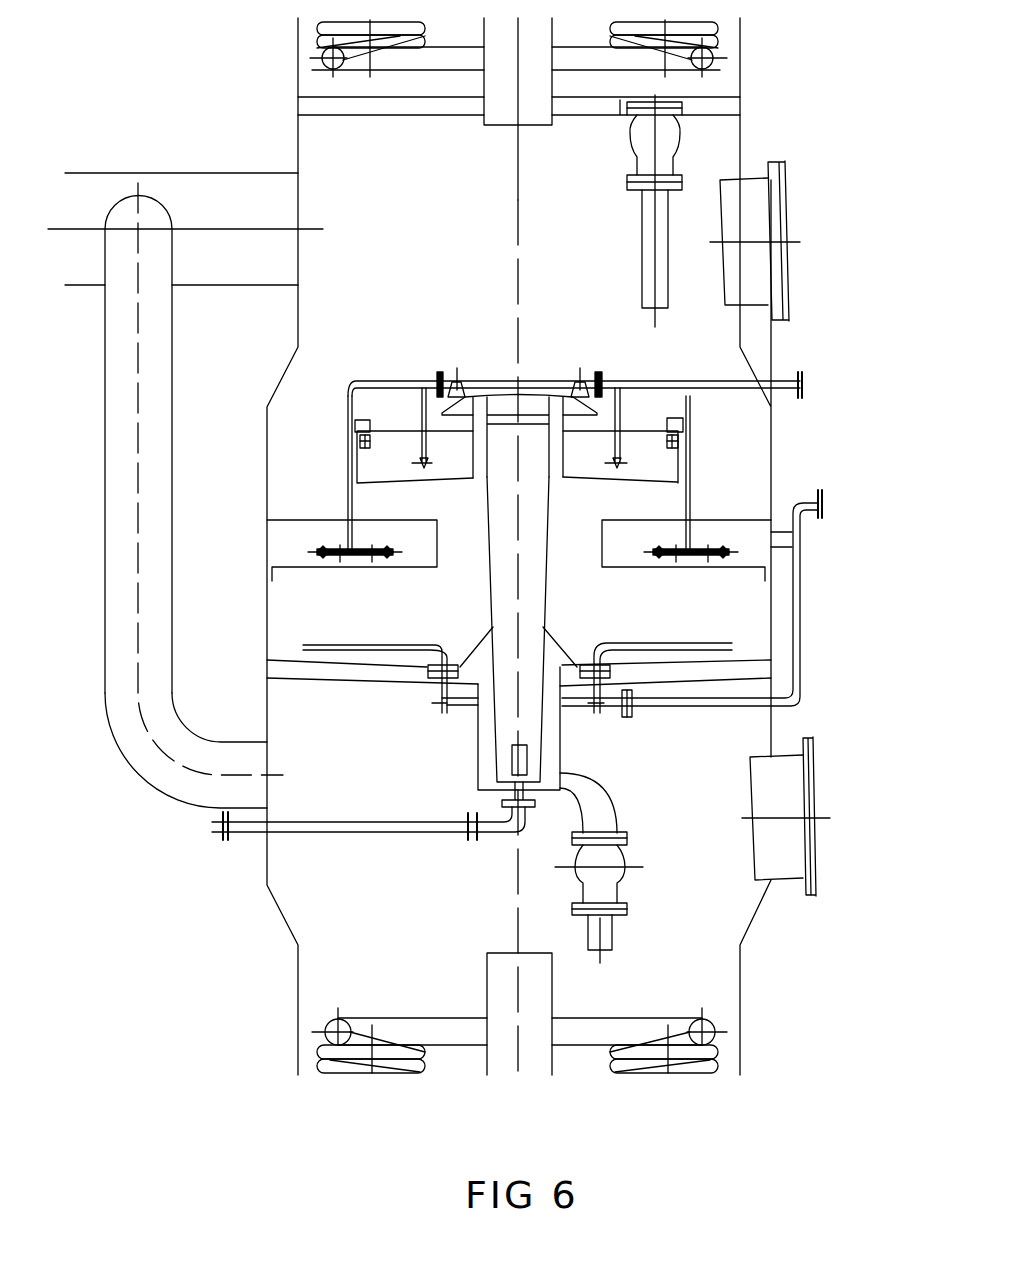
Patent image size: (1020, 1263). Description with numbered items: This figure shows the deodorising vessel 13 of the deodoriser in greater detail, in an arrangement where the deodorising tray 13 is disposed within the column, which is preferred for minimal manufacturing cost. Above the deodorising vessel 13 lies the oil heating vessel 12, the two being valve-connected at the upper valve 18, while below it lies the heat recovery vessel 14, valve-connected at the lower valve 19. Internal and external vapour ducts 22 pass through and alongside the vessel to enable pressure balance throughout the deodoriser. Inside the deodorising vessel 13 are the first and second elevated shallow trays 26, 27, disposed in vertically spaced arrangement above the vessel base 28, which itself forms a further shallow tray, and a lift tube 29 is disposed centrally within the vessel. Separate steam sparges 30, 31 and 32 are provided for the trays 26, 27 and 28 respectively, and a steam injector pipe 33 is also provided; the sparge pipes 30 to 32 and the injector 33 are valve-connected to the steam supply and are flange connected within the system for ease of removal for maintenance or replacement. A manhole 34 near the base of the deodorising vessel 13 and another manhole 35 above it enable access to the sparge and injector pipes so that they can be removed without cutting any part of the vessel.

The oil heating vessel 12 is at (725, 46).
The deodorising vessel 13 is at (743, 627).
The heat recovery vessel 14 is at (728, 1043).
The valve connection 18 is at (615, 137).
The valve connection 19 is at (625, 867).
The vapour duct 22 is at (200, 173).
The first elevated shallow tray 26 is at (380, 478).
The second elevated shallow tray 27 is at (298, 567).
The vessel base 28 is at (303, 662).
The central shaft 29 is at (548, 611).
The steam sparge 30 is at (617, 460).
The steam sparge 31 is at (335, 556).
The steam sparge 32 is at (397, 645).
The steam injector pipe 33 is at (510, 760).
The manhole 34 is at (816, 855).
The manhole 35 is at (787, 278).